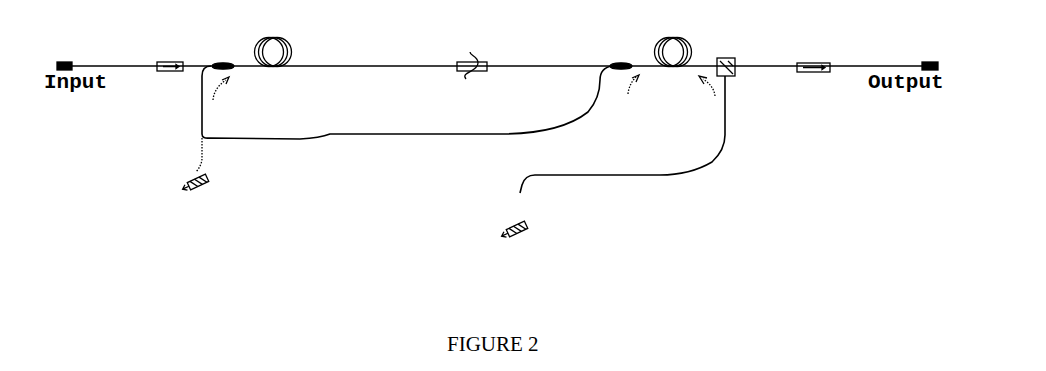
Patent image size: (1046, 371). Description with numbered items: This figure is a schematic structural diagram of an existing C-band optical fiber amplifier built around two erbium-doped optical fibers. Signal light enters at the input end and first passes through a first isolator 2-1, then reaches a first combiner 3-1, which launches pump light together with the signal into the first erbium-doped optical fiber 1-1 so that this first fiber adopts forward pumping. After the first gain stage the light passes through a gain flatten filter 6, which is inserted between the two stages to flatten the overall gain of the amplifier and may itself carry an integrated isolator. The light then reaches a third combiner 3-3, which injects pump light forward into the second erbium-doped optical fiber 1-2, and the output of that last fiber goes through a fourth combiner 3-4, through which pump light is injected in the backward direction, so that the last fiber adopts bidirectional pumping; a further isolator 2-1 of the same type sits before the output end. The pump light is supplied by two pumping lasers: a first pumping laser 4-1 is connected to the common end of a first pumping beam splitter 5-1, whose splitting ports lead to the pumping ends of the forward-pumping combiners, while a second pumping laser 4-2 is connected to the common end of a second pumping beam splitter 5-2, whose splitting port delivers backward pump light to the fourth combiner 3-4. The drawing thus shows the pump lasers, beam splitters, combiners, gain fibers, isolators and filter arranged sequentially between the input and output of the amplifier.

The first erbium-doped optical fiber 1-1 is at (281, 37).
The second erbium-doped optical fiber 1-2 is at (672, 34).
The first isolator 2-1 is at (190, 44).
The first combiner 3-1 is at (242, 45).
The third combiner 3-3 is at (635, 46).
The fourth combiner 3-4 is at (730, 58).
The first pumping laser 4-1 is at (210, 185).
The second pumping laser 4-2 is at (530, 232).
The first pumping beam splitter 5-1 is at (205, 155).
The second pumping beam splitter 5-2 is at (522, 195).
The gain flatten filter 6 is at (473, 61).